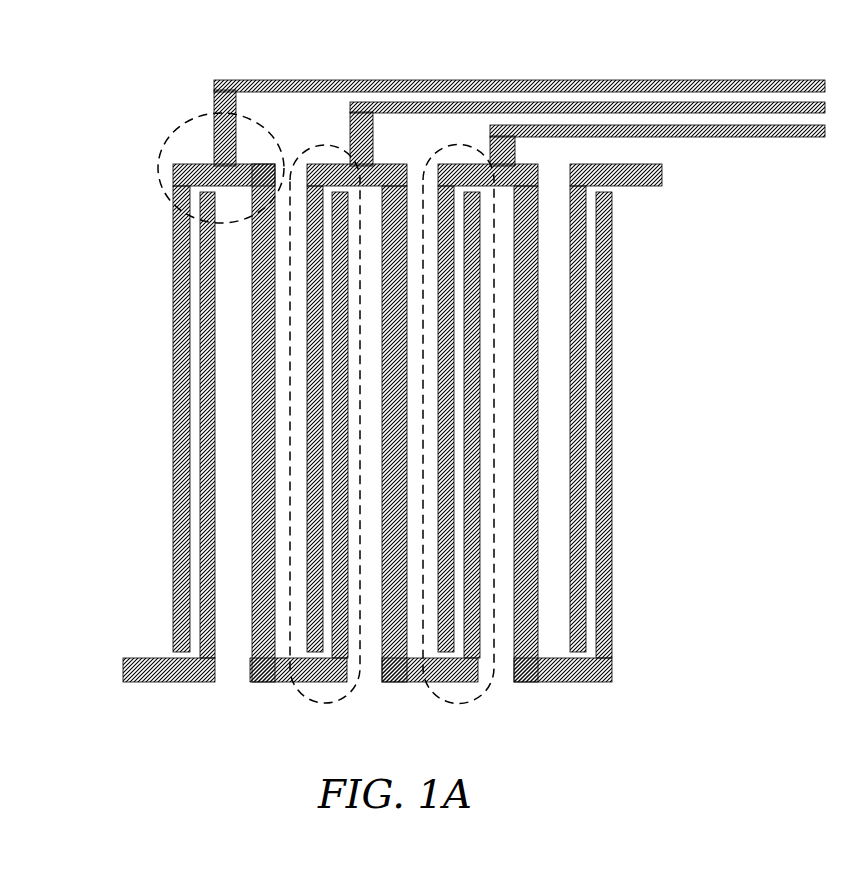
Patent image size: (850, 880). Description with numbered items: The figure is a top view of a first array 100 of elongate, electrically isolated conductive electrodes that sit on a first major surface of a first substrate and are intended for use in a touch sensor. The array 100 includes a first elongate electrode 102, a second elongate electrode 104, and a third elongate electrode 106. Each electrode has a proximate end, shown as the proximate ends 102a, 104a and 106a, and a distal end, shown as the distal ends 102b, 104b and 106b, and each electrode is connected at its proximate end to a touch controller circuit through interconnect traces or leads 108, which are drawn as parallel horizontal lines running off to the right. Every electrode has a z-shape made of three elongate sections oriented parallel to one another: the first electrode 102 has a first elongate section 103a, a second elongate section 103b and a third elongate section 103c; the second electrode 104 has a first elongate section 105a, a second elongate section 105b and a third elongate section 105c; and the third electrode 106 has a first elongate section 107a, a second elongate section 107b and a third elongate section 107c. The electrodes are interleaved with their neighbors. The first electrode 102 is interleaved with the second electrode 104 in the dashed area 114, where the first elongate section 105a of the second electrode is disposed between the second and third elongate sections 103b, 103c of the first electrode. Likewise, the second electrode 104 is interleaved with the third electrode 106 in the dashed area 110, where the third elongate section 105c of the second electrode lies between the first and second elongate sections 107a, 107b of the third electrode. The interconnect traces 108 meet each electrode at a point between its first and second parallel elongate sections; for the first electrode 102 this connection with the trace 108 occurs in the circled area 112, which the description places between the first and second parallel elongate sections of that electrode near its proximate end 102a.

The first array 100 is at (128, 31).
The first elongate electrode 102 is at (207, 164).
The proximate end of first electrode 102a is at (185, 165).
The distal end of first electrode 102b is at (263, 682).
The first elongate section of first electrode 103a is at (173, 369).
The second elongate section of first electrode 103b is at (250, 433).
The third elongate section of first electrode 103c is at (345, 520).
The second elongate electrode 104 is at (380, 164).
The proximate end of second electrode 104a is at (395, 164).
The distal end of second electrode 104b is at (395, 682).
The first elongate section of second electrode 105a is at (307, 552).
The second elongate section of second electrode 105b is at (383, 610).
The third elongate section of second electrode 105c is at (478, 572).
The third elongate electrode 106 is at (473, 164).
The proximate end of third electrode 106a is at (522, 164).
The distal end of third electrode 106b is at (562, 682).
The first elongate section of third electrode 107a is at (437, 540).
The second elongate section of third electrode 107b is at (515, 463).
The third elongate section of third electrode 107c is at (612, 373).
The interconnect traces 108 is at (683, 125).
The interleave area 110 is at (440, 146).
The connection area 112 is at (235, 222).
The interleave area 114 is at (317, 145).